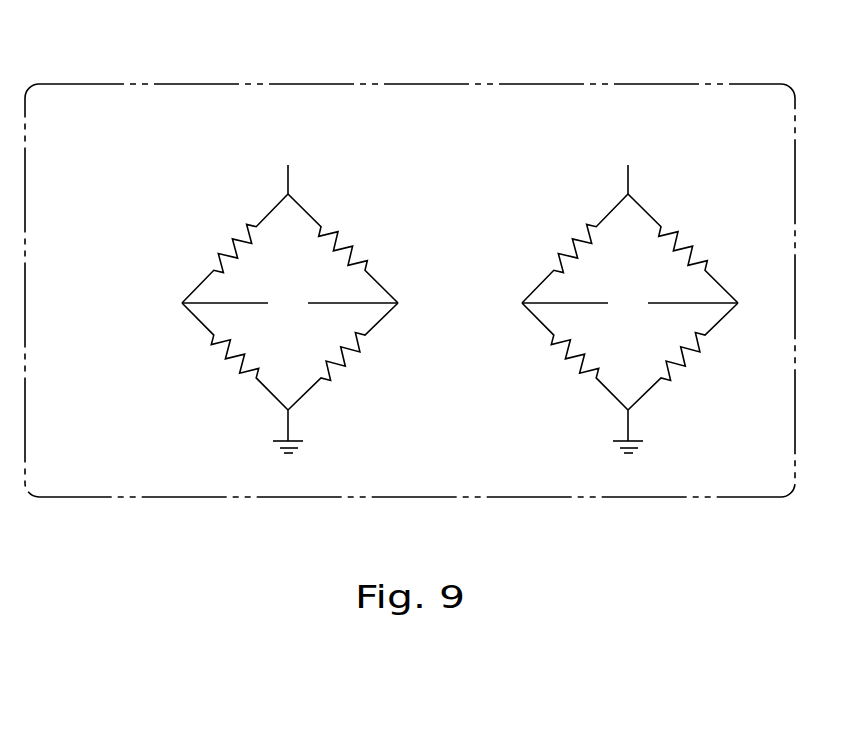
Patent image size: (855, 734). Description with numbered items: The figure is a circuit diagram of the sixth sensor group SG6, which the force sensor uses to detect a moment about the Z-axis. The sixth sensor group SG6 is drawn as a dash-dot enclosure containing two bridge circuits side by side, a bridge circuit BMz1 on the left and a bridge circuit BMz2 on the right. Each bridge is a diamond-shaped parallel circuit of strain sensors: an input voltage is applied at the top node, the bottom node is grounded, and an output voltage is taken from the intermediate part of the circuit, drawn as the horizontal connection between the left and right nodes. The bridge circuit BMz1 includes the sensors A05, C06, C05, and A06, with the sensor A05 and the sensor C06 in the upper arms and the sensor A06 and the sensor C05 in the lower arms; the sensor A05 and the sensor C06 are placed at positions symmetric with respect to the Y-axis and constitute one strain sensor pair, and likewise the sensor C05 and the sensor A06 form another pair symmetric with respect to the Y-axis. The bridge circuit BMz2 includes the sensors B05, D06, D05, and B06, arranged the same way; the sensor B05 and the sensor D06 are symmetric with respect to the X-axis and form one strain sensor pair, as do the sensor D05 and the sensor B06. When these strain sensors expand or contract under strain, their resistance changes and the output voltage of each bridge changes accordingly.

The sixth sensor group SG6 is at (138, 84).
The bridge circuit BMz1 is at (150, 170).
The bridge circuit BMz2 is at (522, 170).
The sensor A05 is at (227, 248).
The sensor A06 is at (227, 356).
The sensor C05 is at (344, 356).
The sensor C06 is at (344, 248).
The sensor B05 is at (567, 248).
The sensor B06 is at (567, 356).
The sensor D05 is at (685, 356).
The sensor D06 is at (685, 248).